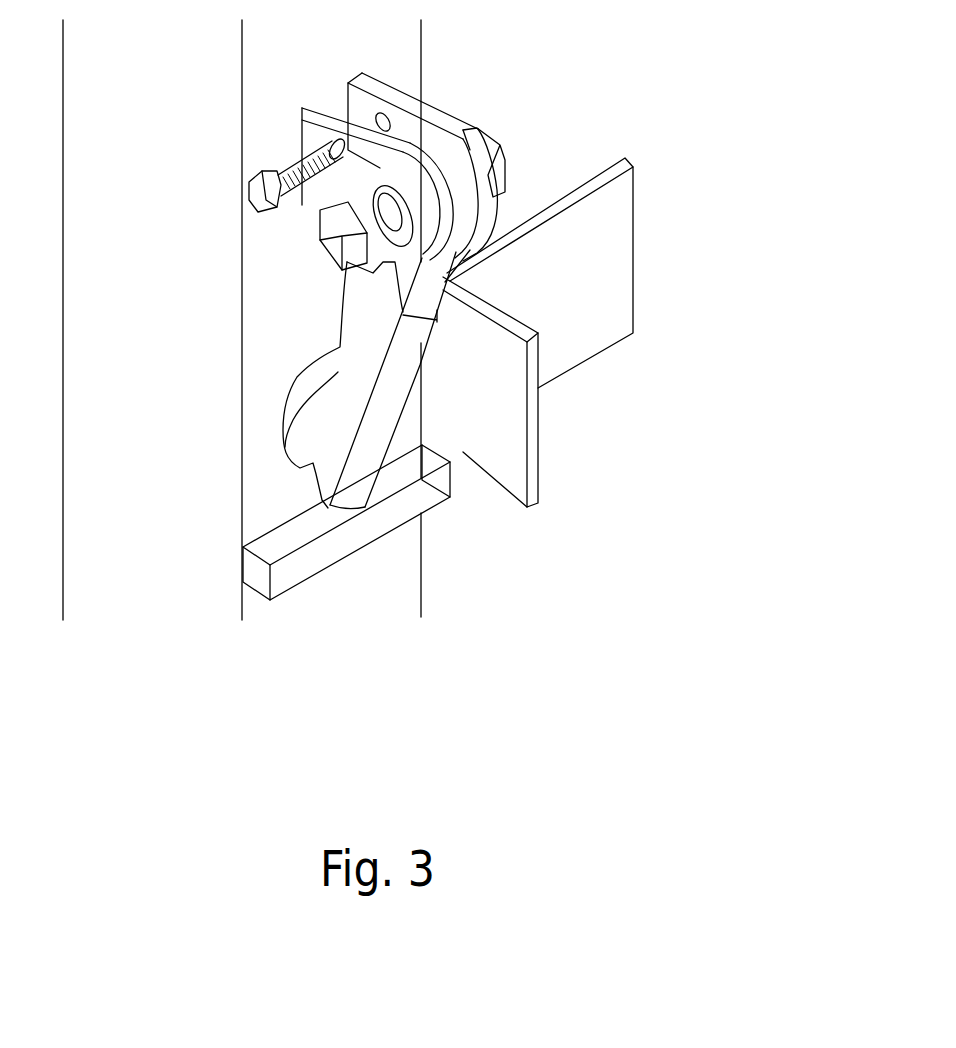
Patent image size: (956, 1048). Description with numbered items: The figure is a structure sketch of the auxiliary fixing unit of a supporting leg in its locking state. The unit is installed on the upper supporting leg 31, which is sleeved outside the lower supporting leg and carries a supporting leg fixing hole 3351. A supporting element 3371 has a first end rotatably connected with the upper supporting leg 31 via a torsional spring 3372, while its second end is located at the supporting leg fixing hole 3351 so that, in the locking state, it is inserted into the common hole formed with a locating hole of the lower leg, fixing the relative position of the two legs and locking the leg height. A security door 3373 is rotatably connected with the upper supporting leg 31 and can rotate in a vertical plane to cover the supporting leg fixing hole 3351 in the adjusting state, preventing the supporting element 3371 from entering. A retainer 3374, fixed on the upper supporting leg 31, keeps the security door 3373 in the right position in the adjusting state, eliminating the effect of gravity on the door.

The upper supporting leg 31 is at (422, 63).
The supporting leg fixing hole 3351 is at (308, 398).
The supporting element 3371 is at (388, 435).
The torsional spring 3372 is at (367, 193).
The security door 3373 is at (635, 243).
The retainer 3374 is at (327, 568).